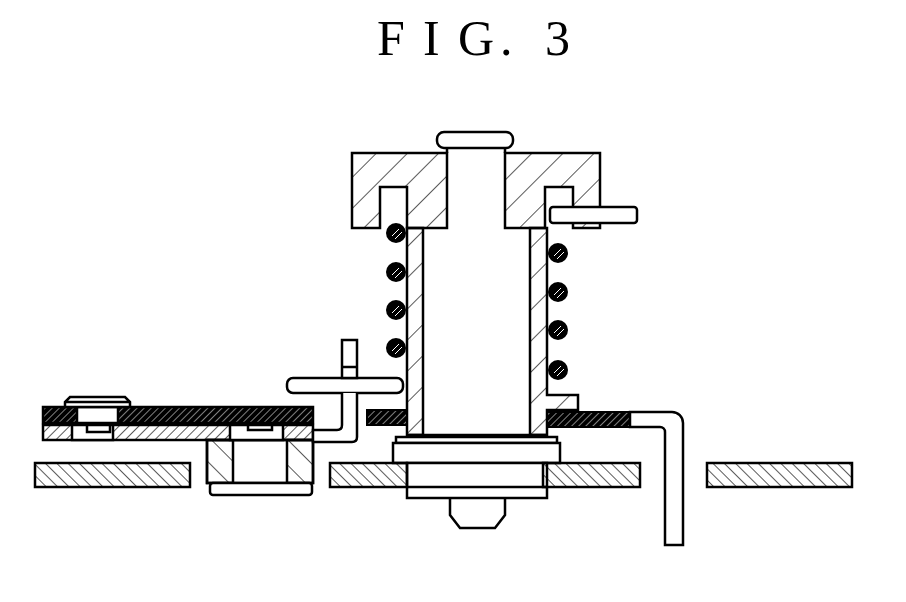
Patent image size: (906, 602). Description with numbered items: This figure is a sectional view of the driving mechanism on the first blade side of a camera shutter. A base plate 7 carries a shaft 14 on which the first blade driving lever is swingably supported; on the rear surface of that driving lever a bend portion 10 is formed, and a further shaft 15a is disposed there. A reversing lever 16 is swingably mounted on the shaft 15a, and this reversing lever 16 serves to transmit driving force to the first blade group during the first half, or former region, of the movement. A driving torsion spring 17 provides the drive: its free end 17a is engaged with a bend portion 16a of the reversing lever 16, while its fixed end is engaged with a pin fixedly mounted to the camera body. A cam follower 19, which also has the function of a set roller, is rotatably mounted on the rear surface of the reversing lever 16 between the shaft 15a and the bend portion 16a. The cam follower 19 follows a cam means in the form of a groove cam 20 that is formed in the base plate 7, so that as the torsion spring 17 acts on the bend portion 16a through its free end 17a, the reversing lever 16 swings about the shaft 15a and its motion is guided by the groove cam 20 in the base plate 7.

The base plate 7 is at (580, 487).
The bend portion 10 is at (665, 510).
The shaft 14 is at (548, 308).
The shaft 15a is at (92, 396).
The reversing lever 16 is at (43, 432).
The bend portion 16a is at (341, 350).
The driving torsion spring 17 is at (384, 270).
The free end 17a is at (288, 382).
The cam follower 19 is at (322, 483).
The groove cam 20 is at (205, 483).